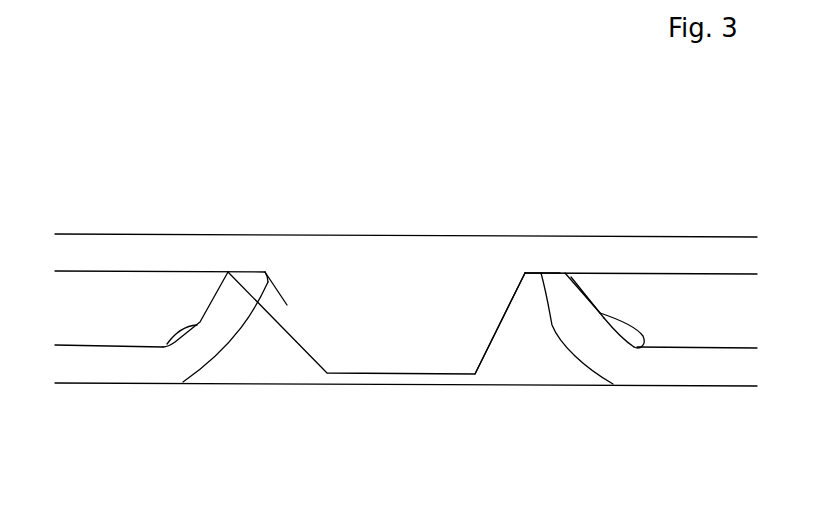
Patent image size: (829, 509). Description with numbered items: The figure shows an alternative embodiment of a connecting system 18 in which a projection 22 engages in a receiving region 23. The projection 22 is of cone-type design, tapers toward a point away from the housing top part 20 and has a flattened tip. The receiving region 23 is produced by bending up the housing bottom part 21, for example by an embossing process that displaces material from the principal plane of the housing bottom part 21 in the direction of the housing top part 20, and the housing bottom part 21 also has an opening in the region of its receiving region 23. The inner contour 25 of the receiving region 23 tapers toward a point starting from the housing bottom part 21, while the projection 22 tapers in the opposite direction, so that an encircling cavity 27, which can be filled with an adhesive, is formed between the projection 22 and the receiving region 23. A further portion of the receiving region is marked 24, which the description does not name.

The packaging laminate 18 is at (107, 208).
The housing top part 20 is at (160, 247).
The housing bottom part 21 is at (122, 365).
The projection 22 is at (363, 303).
The receiving region 23 is at (572, 323).
The side wall 24 is at (528, 322).
The inner contour 25 is at (550, 322).
The encircling cavity 27 is at (520, 294).